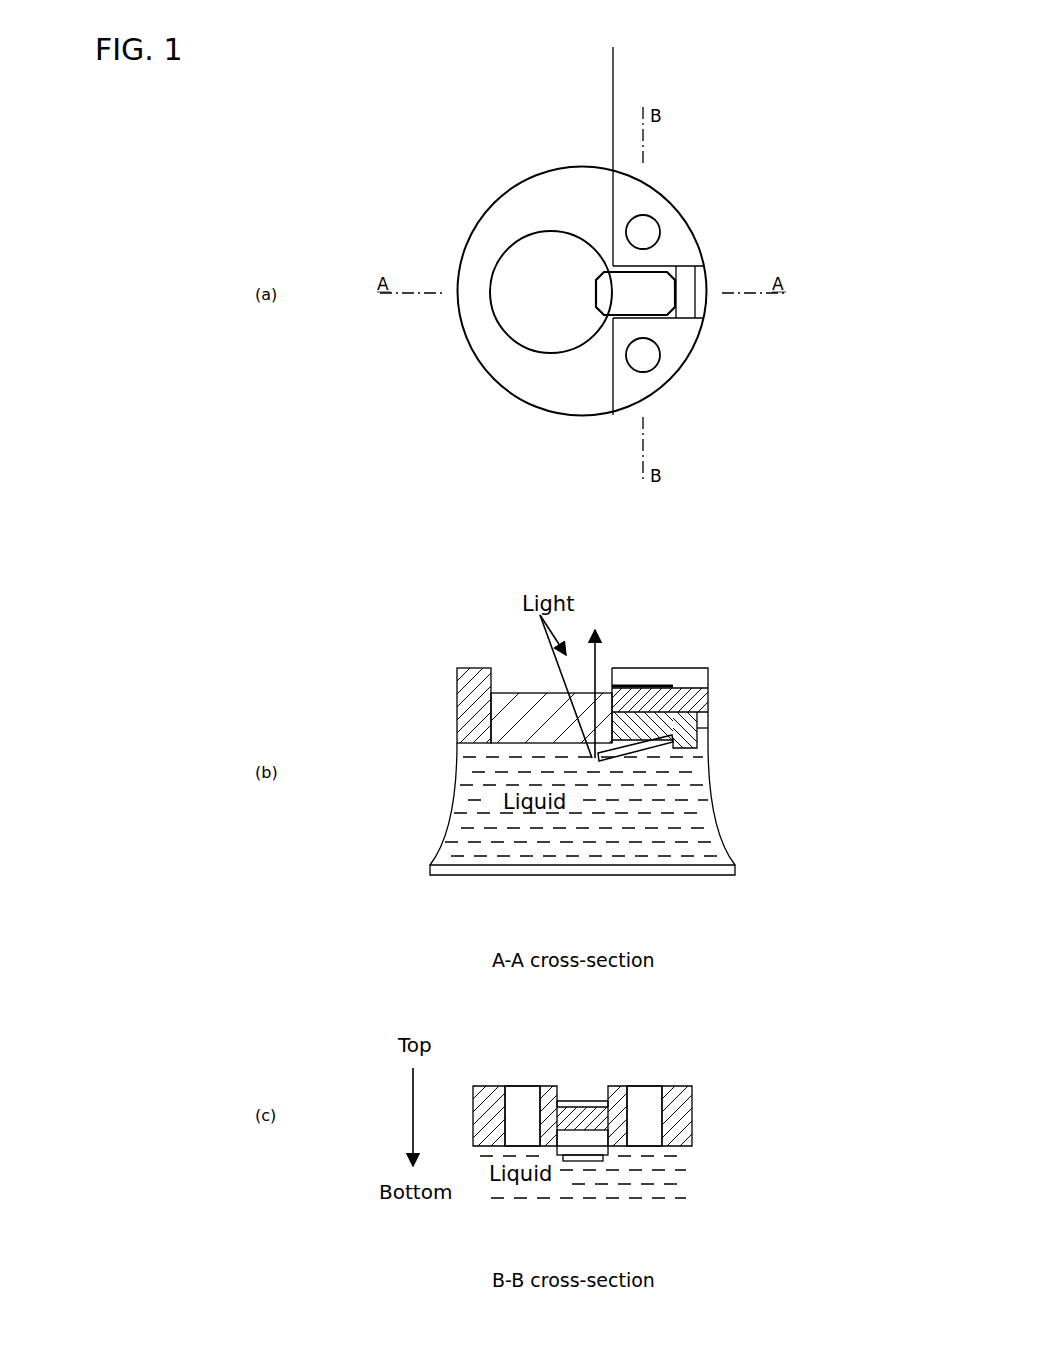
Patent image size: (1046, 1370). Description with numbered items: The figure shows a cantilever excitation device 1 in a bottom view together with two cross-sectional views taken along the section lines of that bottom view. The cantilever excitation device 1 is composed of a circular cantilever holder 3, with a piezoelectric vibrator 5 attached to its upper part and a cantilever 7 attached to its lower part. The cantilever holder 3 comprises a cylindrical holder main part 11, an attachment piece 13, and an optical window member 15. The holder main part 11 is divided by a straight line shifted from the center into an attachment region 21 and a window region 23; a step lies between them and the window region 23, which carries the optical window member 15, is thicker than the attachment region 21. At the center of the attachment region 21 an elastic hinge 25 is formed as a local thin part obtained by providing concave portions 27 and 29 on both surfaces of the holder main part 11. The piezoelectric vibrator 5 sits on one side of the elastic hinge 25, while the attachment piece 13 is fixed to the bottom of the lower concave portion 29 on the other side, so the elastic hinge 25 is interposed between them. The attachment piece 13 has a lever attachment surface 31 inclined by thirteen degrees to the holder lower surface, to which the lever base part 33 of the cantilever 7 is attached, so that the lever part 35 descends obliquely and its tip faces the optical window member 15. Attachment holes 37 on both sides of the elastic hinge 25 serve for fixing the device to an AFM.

The cantilever excitation device 1 is at (752, 165).
The cantilever holder 3 is at (657, 182).
The piezoelectric vibrator 5 is at (643, 686).
The cantilever 7 is at (655, 298).
The holder main part 11 is at (673, 200).
The attachment piece 13 is at (686, 283).
The optical window member 15 is at (552, 231).
The attachment region 21 is at (612, 62).
The window region 23 is at (614, 62).
The elastic hinge 25 is at (700, 700).
The concave portion 27 is at (565, 1097).
The lower concave portion 29 is at (703, 305).
The lever attachment surface 31 is at (657, 326).
The lever base part 33 is at (628, 300).
The lever part 35 is at (597, 764).
The attachment holes 37 is at (653, 230).